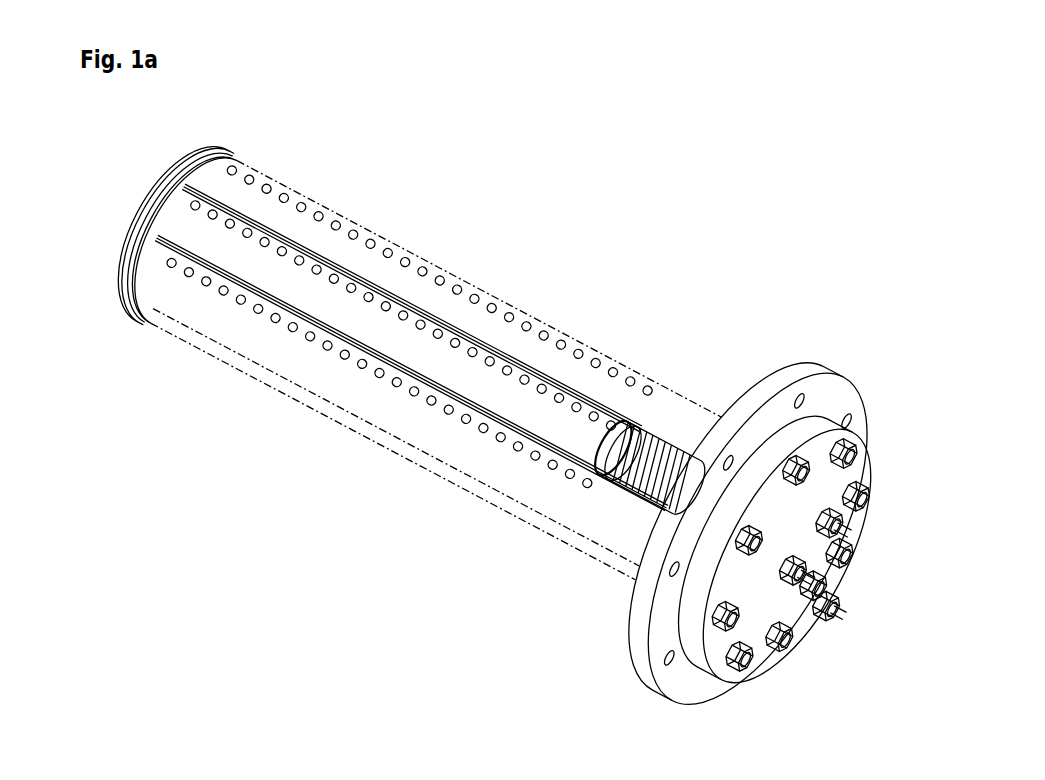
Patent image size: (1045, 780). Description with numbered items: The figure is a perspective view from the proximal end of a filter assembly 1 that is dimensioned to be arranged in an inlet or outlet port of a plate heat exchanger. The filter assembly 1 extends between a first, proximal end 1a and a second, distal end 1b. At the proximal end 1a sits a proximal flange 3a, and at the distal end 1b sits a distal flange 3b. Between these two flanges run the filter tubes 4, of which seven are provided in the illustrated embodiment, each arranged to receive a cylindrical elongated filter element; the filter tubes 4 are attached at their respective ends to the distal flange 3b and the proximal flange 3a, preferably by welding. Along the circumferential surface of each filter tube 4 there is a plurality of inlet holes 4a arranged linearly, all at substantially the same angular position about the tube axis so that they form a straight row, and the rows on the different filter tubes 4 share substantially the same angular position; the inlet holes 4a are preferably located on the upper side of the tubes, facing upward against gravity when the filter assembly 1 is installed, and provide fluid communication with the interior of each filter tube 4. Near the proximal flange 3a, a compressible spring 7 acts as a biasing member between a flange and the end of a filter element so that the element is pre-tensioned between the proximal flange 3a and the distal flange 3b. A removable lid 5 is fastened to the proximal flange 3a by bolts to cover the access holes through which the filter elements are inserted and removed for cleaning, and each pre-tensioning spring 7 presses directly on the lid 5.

The filter assembly 1 is at (595, 143).
The proximal end 1a is at (850, 320).
The distal end 1b is at (247, 115).
The proximal flange 3a is at (709, 534).
The distal flange 3b is at (133, 263).
The filter tube 4 is at (425, 356).
The inlet holes 4a is at (411, 328).
The removable lid 5 is at (799, 563).
The compressible spring 7 is at (654, 421).